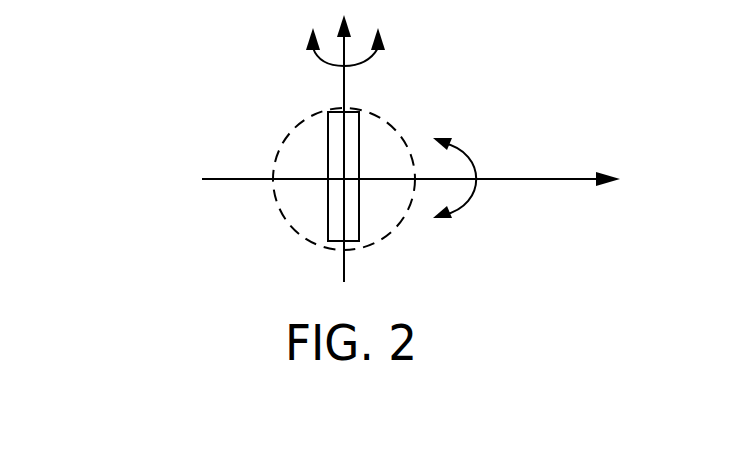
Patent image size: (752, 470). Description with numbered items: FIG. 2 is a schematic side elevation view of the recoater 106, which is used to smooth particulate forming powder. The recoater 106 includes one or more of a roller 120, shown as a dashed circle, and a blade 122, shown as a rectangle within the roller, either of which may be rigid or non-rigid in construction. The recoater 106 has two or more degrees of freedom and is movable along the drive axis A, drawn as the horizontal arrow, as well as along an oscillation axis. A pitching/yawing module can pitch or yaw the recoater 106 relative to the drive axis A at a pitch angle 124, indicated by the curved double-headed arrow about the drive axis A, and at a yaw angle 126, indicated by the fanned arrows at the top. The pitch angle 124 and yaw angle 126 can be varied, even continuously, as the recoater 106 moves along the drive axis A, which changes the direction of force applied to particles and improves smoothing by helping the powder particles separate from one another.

The recoater 106 is at (164, 234).
The roller 120 is at (288, 224).
The blade 122 is at (353, 233).
The pitch angle 124 is at (470, 162).
The yaw angle 126 is at (378, 50).
The drive axis A is at (548, 179).